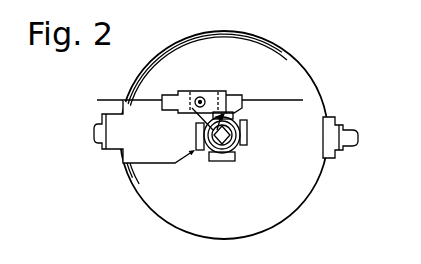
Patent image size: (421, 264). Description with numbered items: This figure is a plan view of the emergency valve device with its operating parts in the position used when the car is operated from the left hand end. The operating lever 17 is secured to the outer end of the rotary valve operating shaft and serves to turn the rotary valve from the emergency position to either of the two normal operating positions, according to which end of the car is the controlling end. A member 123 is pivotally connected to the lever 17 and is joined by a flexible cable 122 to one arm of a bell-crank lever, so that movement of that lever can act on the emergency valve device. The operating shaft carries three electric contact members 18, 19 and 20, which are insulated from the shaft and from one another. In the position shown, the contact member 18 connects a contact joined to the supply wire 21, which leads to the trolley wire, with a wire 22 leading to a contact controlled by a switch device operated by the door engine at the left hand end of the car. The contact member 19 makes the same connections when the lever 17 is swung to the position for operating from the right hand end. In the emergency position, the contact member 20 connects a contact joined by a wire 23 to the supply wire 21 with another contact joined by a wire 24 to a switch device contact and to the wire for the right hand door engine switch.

The flexible cable 122 is at (112, 100).
The member 123 is at (233, 97).
The operating lever 17 is at (243, 112).
The electric contact member 18 is at (191, 140).
The electric contact member 19 is at (215, 161).
The electric contact member 20 is at (251, 134).
The supply wire 21 is at (192, 129).
The wire 22 is at (142, 165).
The wire 23 is at (287, 136).
The wire 24 is at (250, 156).